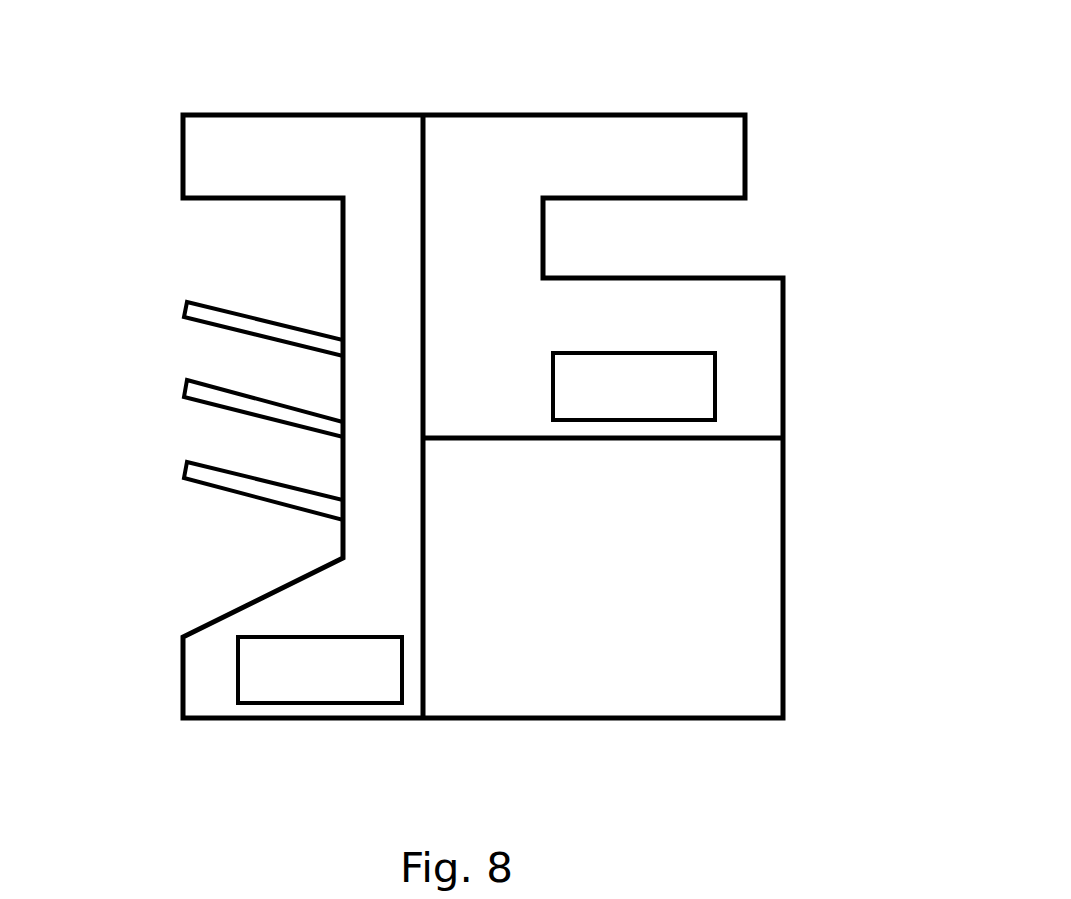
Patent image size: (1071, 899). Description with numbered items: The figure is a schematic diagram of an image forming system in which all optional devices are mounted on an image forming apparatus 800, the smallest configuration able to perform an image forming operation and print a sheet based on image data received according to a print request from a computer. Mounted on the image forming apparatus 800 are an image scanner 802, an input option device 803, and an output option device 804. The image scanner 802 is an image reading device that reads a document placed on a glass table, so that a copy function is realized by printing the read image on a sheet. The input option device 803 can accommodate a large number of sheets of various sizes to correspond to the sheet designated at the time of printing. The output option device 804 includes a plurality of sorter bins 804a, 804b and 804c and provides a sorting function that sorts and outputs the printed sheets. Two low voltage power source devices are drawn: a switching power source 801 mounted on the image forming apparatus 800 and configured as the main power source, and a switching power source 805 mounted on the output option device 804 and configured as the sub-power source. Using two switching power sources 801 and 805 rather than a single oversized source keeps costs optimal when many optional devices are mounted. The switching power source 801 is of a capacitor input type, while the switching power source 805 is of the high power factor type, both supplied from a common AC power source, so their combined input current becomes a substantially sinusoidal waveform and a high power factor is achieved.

The image forming apparatus 800 is at (785, 296).
The switching power source 801 is at (716, 383).
The image scanner 802 is at (610, 115).
The input option device 803 is at (785, 548).
The output option device 804 is at (183, 163).
The sorter bin 804a is at (183, 310).
The sorter bin 804b is at (184, 388).
The sorter bin 804c is at (184, 470).
The switching power source 805 is at (238, 672).